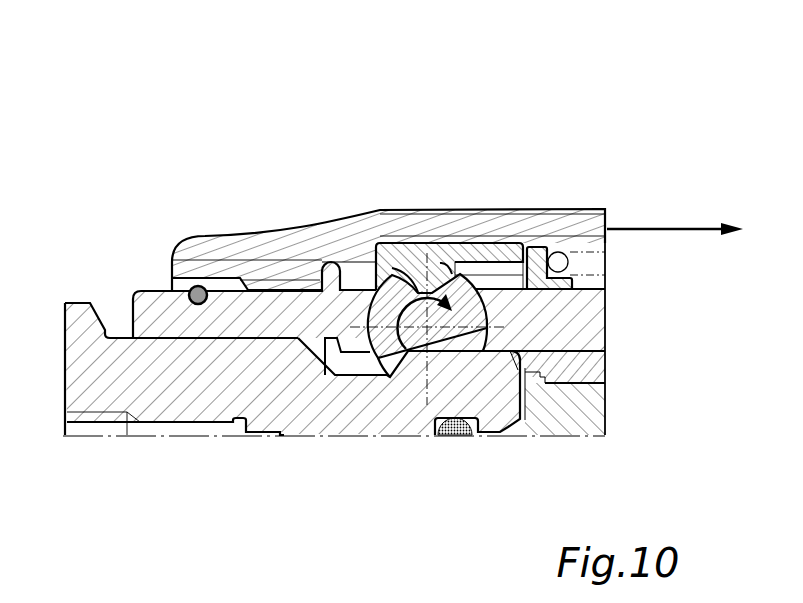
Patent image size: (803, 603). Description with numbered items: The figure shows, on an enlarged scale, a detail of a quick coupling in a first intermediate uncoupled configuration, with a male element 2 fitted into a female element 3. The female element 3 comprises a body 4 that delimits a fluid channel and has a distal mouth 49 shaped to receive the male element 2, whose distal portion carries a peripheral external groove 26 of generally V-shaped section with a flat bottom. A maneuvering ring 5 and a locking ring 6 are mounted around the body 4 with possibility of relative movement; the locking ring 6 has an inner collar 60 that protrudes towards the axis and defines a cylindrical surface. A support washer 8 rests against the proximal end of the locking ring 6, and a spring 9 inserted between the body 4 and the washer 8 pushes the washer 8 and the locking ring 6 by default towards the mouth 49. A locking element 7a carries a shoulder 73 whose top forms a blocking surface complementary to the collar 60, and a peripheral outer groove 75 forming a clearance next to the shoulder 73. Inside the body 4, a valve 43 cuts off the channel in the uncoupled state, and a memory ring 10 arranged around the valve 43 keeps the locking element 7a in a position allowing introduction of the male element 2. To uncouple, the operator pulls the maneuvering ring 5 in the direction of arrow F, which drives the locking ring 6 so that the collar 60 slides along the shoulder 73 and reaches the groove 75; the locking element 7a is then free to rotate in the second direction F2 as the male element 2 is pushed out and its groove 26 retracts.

The female element 3 is at (394, 233).
The male element 2 is at (90, 323).
The body 4 is at (578, 327).
The distal opening or mouth 49 is at (162, 310).
The peripheral and external groove 26 is at (347, 352).
The maneuvering ring 5 is at (533, 243).
The locking ring 6 is at (487, 260).
The locking element 7a is at (387, 313).
The shoulder 73 is at (378, 268).
The inner rib or collar 60 is at (417, 291).
The peripheral outer groove 75 is at (442, 272).
The support washer 8 is at (537, 257).
The spring 9 is at (565, 267).
The memory ring 10 is at (582, 366).
The valve 43 is at (577, 408).
The arrow F is at (675, 212).
The second direction F2 is at (438, 321).